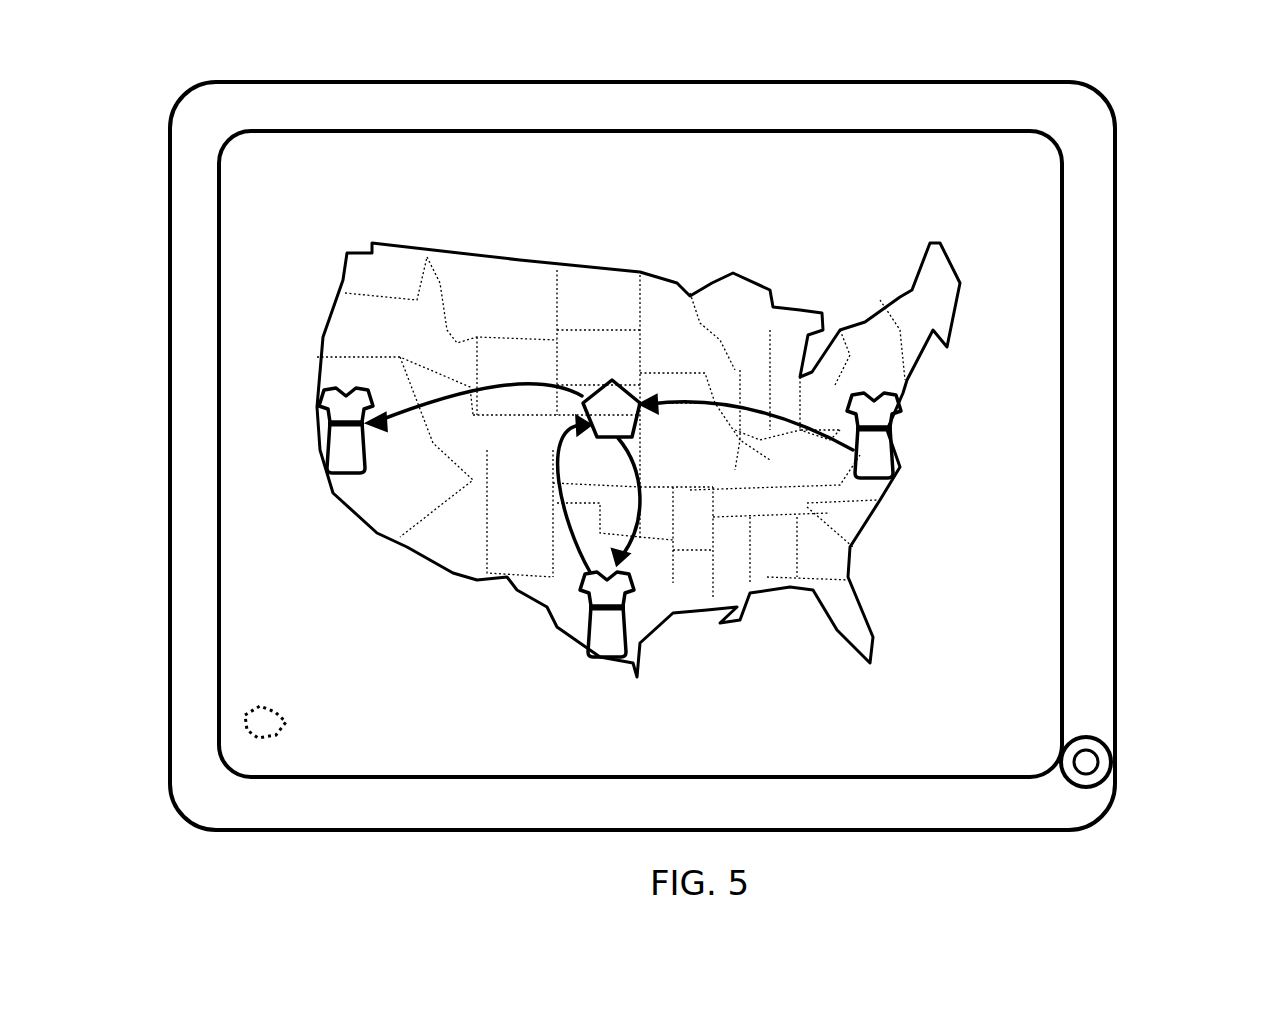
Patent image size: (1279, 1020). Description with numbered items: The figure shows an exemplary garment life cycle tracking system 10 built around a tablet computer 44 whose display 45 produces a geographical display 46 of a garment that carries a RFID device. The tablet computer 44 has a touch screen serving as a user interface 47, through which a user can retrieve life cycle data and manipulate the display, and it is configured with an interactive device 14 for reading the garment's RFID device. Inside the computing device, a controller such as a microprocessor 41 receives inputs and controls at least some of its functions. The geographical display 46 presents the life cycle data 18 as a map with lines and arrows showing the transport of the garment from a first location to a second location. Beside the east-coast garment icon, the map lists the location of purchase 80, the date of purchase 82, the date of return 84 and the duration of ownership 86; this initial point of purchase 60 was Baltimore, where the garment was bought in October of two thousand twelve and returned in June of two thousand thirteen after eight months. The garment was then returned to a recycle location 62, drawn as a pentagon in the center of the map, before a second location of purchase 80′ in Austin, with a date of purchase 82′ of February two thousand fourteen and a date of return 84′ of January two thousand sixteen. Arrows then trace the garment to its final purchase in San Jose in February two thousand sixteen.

The garment life cycle tracking system 10 is at (1150, 274).
The interactive device 14 is at (1086, 748).
The life cycle data 18 is at (332, 276).
The microprocessor 41 is at (252, 725).
The tablet computer 44 is at (1015, 597).
The display 45 is at (970, 195).
The geographical display 46 is at (358, 338).
The user interface 47 is at (1030, 658).
The initial point of purchase 60 is at (900, 468).
The recycle location 62 is at (611, 398).
The location of purchase 80 is at (905, 393).
The date of purchase 82 is at (993, 437).
The date of return 84 is at (993, 454).
The duration of ownership 86 is at (1027, 501).
The location of purchase 80′ is at (470, 689).
The date of purchase 82′ is at (470, 631).
The date of return 84′ is at (468, 658).